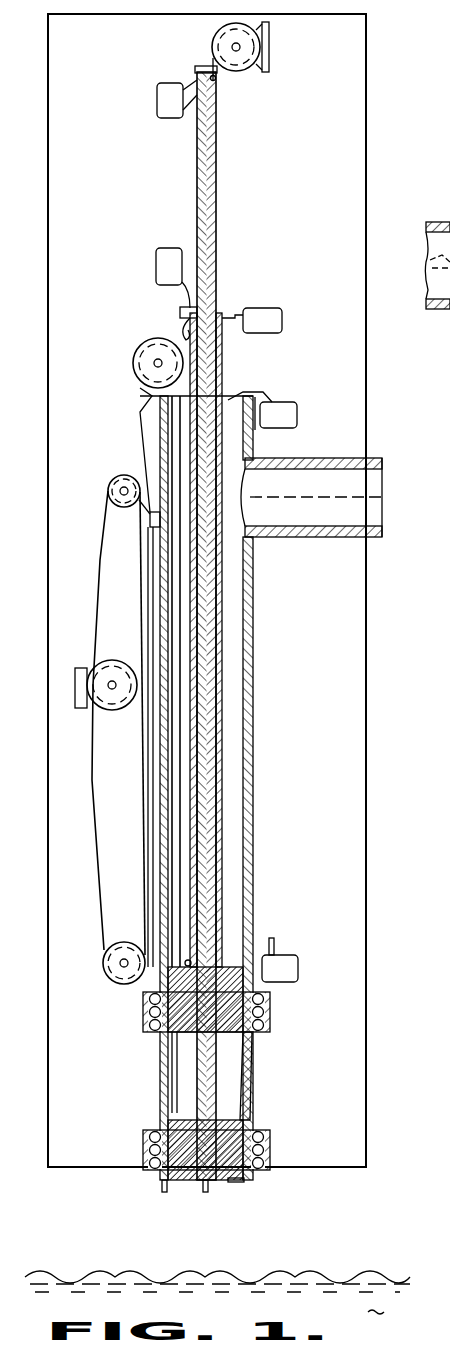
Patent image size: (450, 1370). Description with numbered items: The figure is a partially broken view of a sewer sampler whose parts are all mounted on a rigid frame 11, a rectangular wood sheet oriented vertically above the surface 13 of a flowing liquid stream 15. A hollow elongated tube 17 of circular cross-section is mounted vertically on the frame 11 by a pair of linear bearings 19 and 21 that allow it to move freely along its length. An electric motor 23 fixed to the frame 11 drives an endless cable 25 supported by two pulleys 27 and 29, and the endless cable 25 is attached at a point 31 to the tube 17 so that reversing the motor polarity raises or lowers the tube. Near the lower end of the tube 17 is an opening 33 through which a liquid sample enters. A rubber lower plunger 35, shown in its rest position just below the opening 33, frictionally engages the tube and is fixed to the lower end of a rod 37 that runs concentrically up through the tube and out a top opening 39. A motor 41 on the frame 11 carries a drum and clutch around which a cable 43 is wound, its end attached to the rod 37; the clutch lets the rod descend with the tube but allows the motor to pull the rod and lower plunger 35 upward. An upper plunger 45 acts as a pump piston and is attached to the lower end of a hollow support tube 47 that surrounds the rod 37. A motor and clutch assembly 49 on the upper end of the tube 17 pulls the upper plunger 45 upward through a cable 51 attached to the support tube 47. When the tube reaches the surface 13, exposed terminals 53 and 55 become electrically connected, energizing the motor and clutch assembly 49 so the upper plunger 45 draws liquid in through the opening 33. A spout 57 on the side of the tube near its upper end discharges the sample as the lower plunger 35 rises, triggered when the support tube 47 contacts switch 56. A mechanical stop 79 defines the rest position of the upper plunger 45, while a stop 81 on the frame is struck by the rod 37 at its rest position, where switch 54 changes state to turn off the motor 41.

The rigid frame 11 is at (366, 778).
The surface 13 is at (300, 1276).
The flowing liquid stream 15 is at (385, 1296).
The hollow elongated tube 17 is at (160, 1077).
The linear bearing 19 is at (270, 1022).
The linear bearing 21 is at (270, 1149).
The electric motor 23 is at (95, 668).
The endless cable 25 is at (95, 800).
The pulley 27 is at (108, 491).
The pulley 29 is at (107, 977).
The attachment point 31 is at (151, 530).
The opening 33 is at (248, 1052).
The lower plunger 35 is at (236, 1182).
The rod 37 is at (217, 189).
The top opening 39 is at (230, 399).
The motor 41 is at (262, 47).
The cable 43 is at (218, 78).
The upper plunger 45 is at (243, 975).
The hollow support tube 47 is at (222, 386).
The motor and clutch assembly 49 is at (133, 363).
The cable 51 is at (178, 405).
The exposed terminal 53 is at (144, 1211).
The switch 54 is at (159, 99).
The exposed terminal 55 is at (196, 1226).
The switch 56 is at (155, 278).
The spout 57 is at (305, 538).
The mechanical stop 79 is at (180, 312).
The stop 81 is at (200, 67).